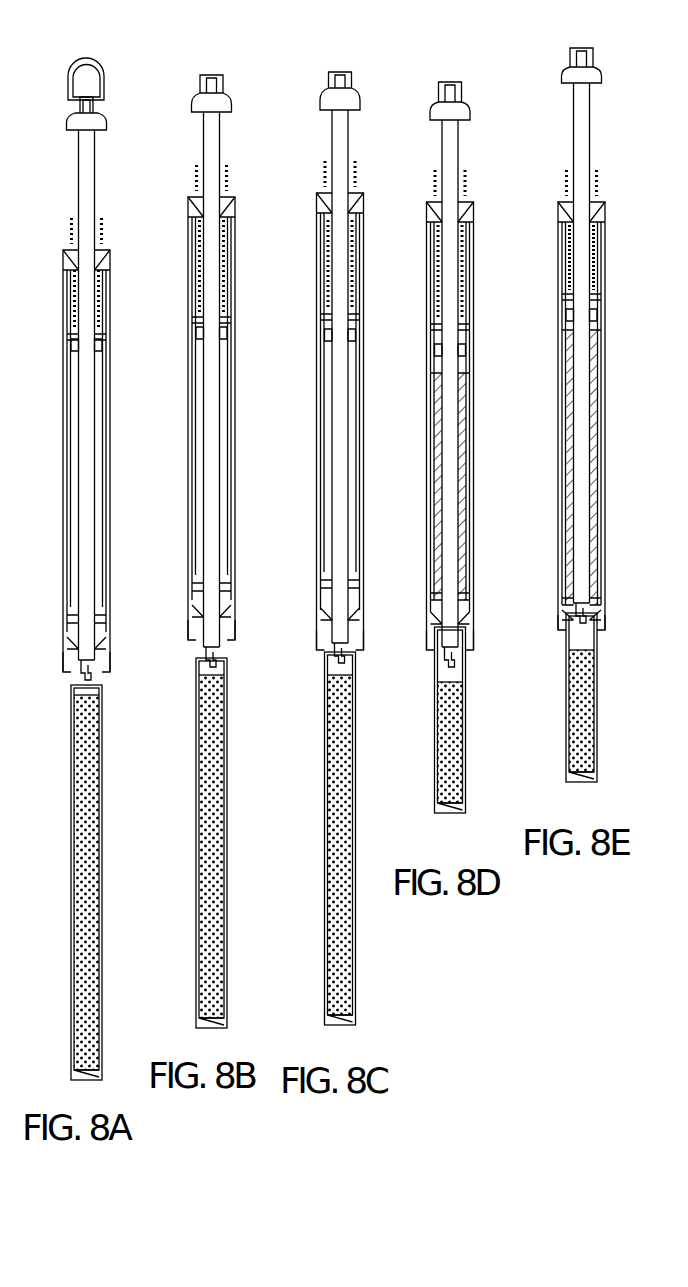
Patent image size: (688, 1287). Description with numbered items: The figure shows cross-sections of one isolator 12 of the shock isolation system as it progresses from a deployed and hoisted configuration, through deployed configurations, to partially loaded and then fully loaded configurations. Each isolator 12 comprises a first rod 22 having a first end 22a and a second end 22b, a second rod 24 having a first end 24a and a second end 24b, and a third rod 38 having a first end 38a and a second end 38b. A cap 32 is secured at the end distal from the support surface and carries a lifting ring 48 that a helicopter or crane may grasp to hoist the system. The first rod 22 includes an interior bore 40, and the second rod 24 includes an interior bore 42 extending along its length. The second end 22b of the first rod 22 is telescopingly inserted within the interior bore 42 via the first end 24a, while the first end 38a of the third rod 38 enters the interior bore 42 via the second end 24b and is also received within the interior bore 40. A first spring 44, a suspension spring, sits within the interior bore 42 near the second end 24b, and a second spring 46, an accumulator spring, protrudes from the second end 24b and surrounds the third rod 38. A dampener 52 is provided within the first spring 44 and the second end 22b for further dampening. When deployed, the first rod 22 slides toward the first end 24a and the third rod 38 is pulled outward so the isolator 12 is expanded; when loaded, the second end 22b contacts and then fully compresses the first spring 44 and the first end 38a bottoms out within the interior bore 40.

In FIG. 8A, the isolator 12 is at (40, 98).
In FIG. 8A, the first rod 22 is at (80, 748).
In FIG. 8B, the first rod 22 is at (212, 697).
In FIG. 8C, the first rod 22 is at (340, 720).
In FIG. 8D, the first rod 22 is at (450, 743).
In FIG. 8E, the first rod 22 is at (578, 715).
In FIG. 8A, the first end of the first rod 22a is at (74, 1078).
In FIG. 8B, the first end of the first rod 22a is at (202, 1030).
In FIG. 8C, the first end of the first rod 22a is at (335, 1027).
In FIG. 8D, the first end of the first rod 22a is at (448, 813).
In FIG. 8E, the first end of the first rod 22a is at (575, 785).
In FIG. 8A, the second end of the first rod 22b is at (65, 637).
In FIG. 8B, the second end of the first rod 22b is at (194, 573).
In FIG. 8C, the second end of the first rod 22b is at (322, 560).
In FIG. 8D, the second end of the first rod 22b is at (432, 360).
In FIG. 8E, the second end of the first rod 22b is at (603, 345).
In FIG. 8A, the second rod 24 is at (64, 485).
In FIG. 8B, the second rod 24 is at (190, 440).
In FIG. 8C, the second rod 24 is at (320, 440).
In FIG. 8D, the second rod 24 is at (428, 455).
In FIG. 8E, the second rod 24 is at (558, 470).
In FIG. 8A, the first end of the second rod 24a is at (66, 673).
In FIG. 8B, the first end of the second rod 24a is at (193, 622).
In FIG. 8C, the first end of the second rod 24a is at (322, 625).
In FIG. 8D, the first end of the second rod 24a is at (438, 640).
In FIG. 8E, the first end of the second rod 24a is at (566, 635).
In FIG. 8A, the second end of the second rod 24b is at (65, 267).
In FIG. 8B, the second end of the second rod 24b is at (195, 210).
In FIG. 8C, the second end of the second rod 24b is at (322, 205).
In FIG. 8D, the second end of the second rod 24b is at (433, 212).
In FIG. 8E, the second end of the second rod 24b is at (563, 215).
In FIG. 8A, the cap 32 is at (67, 122).
In FIG. 8B, the cap 32 is at (196, 108).
In FIG. 8C, the cap 32 is at (325, 105).
In FIG. 8D, the cap 32 is at (433, 113).
In FIG. 8E, the cap 32 is at (560, 73).
In FIG. 8A, the third rod 38 is at (90, 175).
In FIG. 8B, the third rod 38 is at (220, 150).
In FIG. 8C, the third rod 38 is at (347, 158).
In FIG. 8D, the third rod 38 is at (455, 162).
In FIG. 8E, the third rod 38 is at (587, 160).
In FIG. 8A, the first end of the third rod 38a is at (95, 668).
In FIG. 8B, the first end of the third rod 38a is at (222, 648).
In FIG. 8C, the first end of the third rod 38a is at (350, 645).
In FIG. 8D, the first end of the third rod 38a is at (457, 650).
In FIG. 8E, the first end of the third rod 38a is at (590, 610).
In FIG. 8A, the second end of the third rod 38b is at (86, 128).
In FIG. 8B, the second end of the third rod 38b is at (211, 120).
In FIG. 8C, the second end of the third rod 38b is at (340, 110).
In FIG. 8D, the second end of the third rod 38b is at (450, 118).
In FIG. 8E, the second end of the third rod 38b is at (581, 85).
In FIG. 8A, the interior bore 40 is at (68, 660).
In FIG. 8B, the interior bore 40 is at (196, 605).
In FIG. 8C, the interior bore 40 is at (325, 608).
In FIG. 8D, the interior bore 40 is at (436, 618).
In FIG. 8E, the interior bore 40 is at (566, 610).
In FIG. 8A, the interior bore 42 is at (78, 430).
In FIG. 8B, the interior bore 42 is at (196, 380).
In FIG. 8C, the interior bore 42 is at (326, 385).
In FIG. 8D, the interior bore 42 is at (433, 395).
In FIG. 8E, the interior bore 42 is at (562, 398).
In FIG. 8A, the first spring 44 is at (67, 295).
In FIG. 8B, the first spring 44 is at (192, 255).
In FIG. 8C, the first spring 44 is at (320, 262).
In FIG. 8D, the first spring 44 is at (430, 265).
In FIG. 8E, the first spring 44 is at (560, 270).
In FIG. 8A, the second spring 46 is at (70, 238).
In FIG. 8B, the second spring 46 is at (197, 188).
In FIG. 8C, the second spring 46 is at (323, 185).
In FIG. 8D, the second spring 46 is at (435, 195).
In FIG. 8E, the second spring 46 is at (566, 195).
In FIG. 8A, the lifting ring 48 is at (82, 58).
In FIG. 8A, the dampener 52 is at (75, 350).
In FIG. 8B, the dampener 52 is at (198, 335).
In FIG. 8C, the dampener 52 is at (326, 335).
In FIG. 8D, the dampener 52 is at (440, 345).
In FIG. 8E, the dampener 52 is at (563, 310).